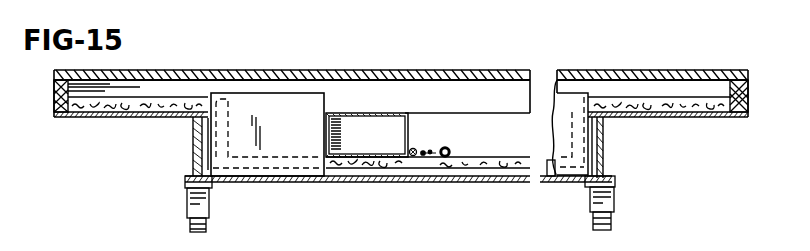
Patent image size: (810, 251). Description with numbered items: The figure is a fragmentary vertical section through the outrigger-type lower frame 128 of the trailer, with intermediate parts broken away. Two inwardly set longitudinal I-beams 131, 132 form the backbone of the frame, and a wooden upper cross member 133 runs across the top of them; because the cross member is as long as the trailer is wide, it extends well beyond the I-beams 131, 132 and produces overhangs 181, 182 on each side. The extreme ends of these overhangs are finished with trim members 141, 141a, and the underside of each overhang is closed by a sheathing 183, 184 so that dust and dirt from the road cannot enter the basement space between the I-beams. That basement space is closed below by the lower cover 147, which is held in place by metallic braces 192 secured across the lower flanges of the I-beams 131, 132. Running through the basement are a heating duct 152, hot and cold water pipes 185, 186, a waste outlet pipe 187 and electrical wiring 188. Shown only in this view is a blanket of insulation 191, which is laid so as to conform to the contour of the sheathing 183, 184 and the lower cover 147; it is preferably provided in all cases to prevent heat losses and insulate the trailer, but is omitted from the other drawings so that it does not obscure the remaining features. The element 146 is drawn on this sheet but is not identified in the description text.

The lower frame 128 is at (630, 65).
The I-beam 131 is at (193, 157).
The I-beam 132 is at (603, 165).
The upper cross member 133 is at (440, 93).
The trim member 141 is at (55, 101).
The trim member 141a is at (749, 90).
The top sheet 146 is at (250, 75).
The lower cover 147 is at (300, 182).
The heating duct 152 is at (362, 127).
The overhang 181 is at (85, 128).
The overhang 182 is at (738, 126).
The sheathing 183 is at (127, 120).
The sheathing 184 is at (712, 118).
The water pipe 185 is at (423, 157).
The water pipe 186 is at (431, 151).
The waste outlet pipe 187 is at (412, 157).
The electrical wiring 188 is at (445, 157).
The blanket of insulation 191 is at (360, 168).
The metallic brace 192 is at (568, 183).